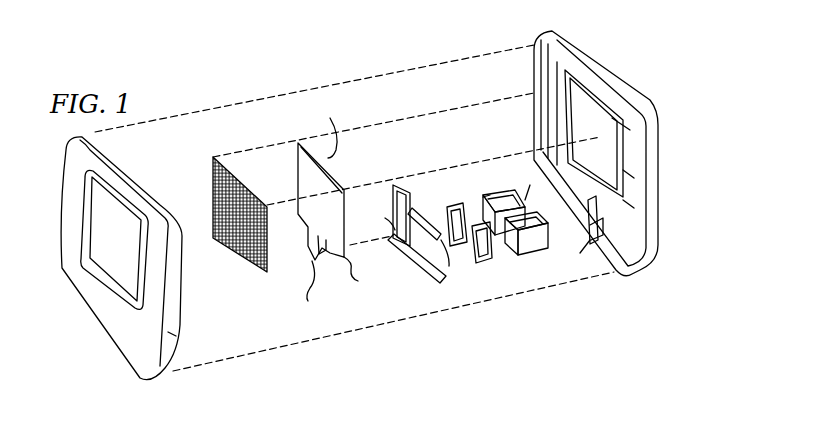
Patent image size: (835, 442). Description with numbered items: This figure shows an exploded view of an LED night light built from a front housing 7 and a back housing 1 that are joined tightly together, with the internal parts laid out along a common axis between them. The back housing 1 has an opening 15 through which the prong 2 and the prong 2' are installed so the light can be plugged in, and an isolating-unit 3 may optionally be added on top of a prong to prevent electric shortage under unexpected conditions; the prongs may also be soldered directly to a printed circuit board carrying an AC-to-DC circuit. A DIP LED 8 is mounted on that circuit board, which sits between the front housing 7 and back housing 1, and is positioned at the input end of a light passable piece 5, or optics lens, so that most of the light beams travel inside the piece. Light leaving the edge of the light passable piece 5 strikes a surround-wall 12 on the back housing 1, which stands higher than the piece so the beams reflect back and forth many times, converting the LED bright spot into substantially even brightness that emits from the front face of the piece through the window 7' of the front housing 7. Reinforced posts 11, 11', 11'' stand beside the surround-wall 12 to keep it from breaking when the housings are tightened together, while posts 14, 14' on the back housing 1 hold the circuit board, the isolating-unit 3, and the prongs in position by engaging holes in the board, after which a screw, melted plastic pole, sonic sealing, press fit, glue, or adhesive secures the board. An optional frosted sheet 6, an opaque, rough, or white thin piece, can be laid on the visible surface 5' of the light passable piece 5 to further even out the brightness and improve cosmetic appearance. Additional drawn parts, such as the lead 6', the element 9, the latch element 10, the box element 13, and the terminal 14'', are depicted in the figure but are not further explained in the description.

The back housing 1 is at (578, 37).
The prong 2 is at (532, 268).
The prong 2' is at (471, 164).
The isolating-unit 3 is at (449, 266).
The light passable piece 5 is at (305, 190).
The visible surface 5' is at (330, 286).
The frosted sheet 6 is at (244, 239).
The block lead wire 6' is at (330, 131).
The front housing 7 is at (98, 258).
The window 7' is at (180, 342).
The DIP LED 8 is at (423, 214).
The contact plate 9 is at (455, 207).
The latch element 10 is at (600, 224).
The reinforced post 11 is at (605, 100).
The reinforced post 11' is at (664, 169).
The reinforced post 11'' is at (665, 199).
The surround-wall 12 is at (627, 127).
The box element 13 is at (492, 252).
The post 14 is at (489, 264).
The post 14' is at (515, 182).
The terminal 14'' is at (380, 215).
The opening 15 is at (523, 153).